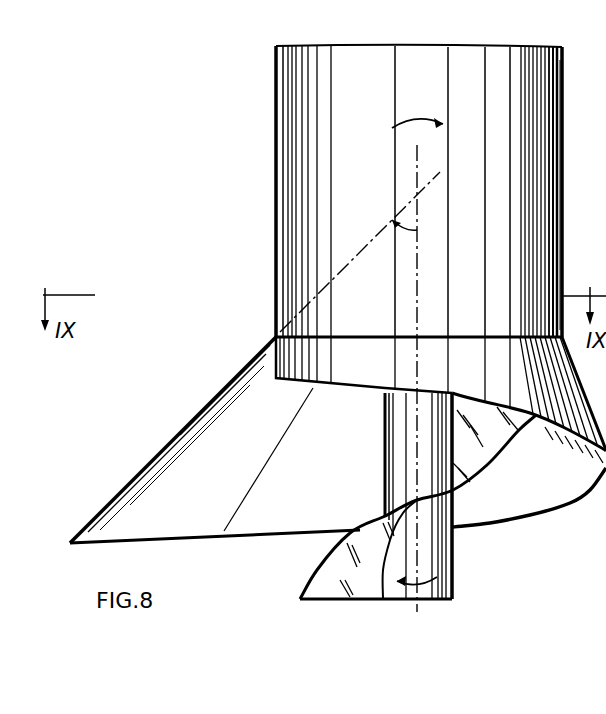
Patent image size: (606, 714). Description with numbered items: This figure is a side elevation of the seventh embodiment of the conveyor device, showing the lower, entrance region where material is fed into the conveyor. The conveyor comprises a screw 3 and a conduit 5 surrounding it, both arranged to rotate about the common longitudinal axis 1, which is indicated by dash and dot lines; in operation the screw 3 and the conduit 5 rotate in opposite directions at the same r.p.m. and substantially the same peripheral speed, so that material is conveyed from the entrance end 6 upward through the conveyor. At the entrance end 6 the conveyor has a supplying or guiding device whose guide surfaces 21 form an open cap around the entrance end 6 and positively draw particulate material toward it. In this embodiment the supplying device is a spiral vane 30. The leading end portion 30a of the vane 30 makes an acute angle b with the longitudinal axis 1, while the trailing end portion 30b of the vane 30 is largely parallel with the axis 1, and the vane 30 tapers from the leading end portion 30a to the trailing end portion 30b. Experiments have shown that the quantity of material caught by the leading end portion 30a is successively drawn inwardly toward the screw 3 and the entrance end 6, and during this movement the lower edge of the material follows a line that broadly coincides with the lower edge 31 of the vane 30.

The axis 1 is at (420, 268).
The screw 3 is at (313, 583).
The conduit 5 is at (284, 165).
The entrance end 6 is at (566, 236).
The guide surfaces 21 is at (233, 379).
The spiral vane 30 is at (183, 447).
The leading end portion 30a is at (104, 507).
The trailing end portion 30b is at (273, 372).
The lower edge 31 is at (196, 538).
The acute angle b is at (404, 237).